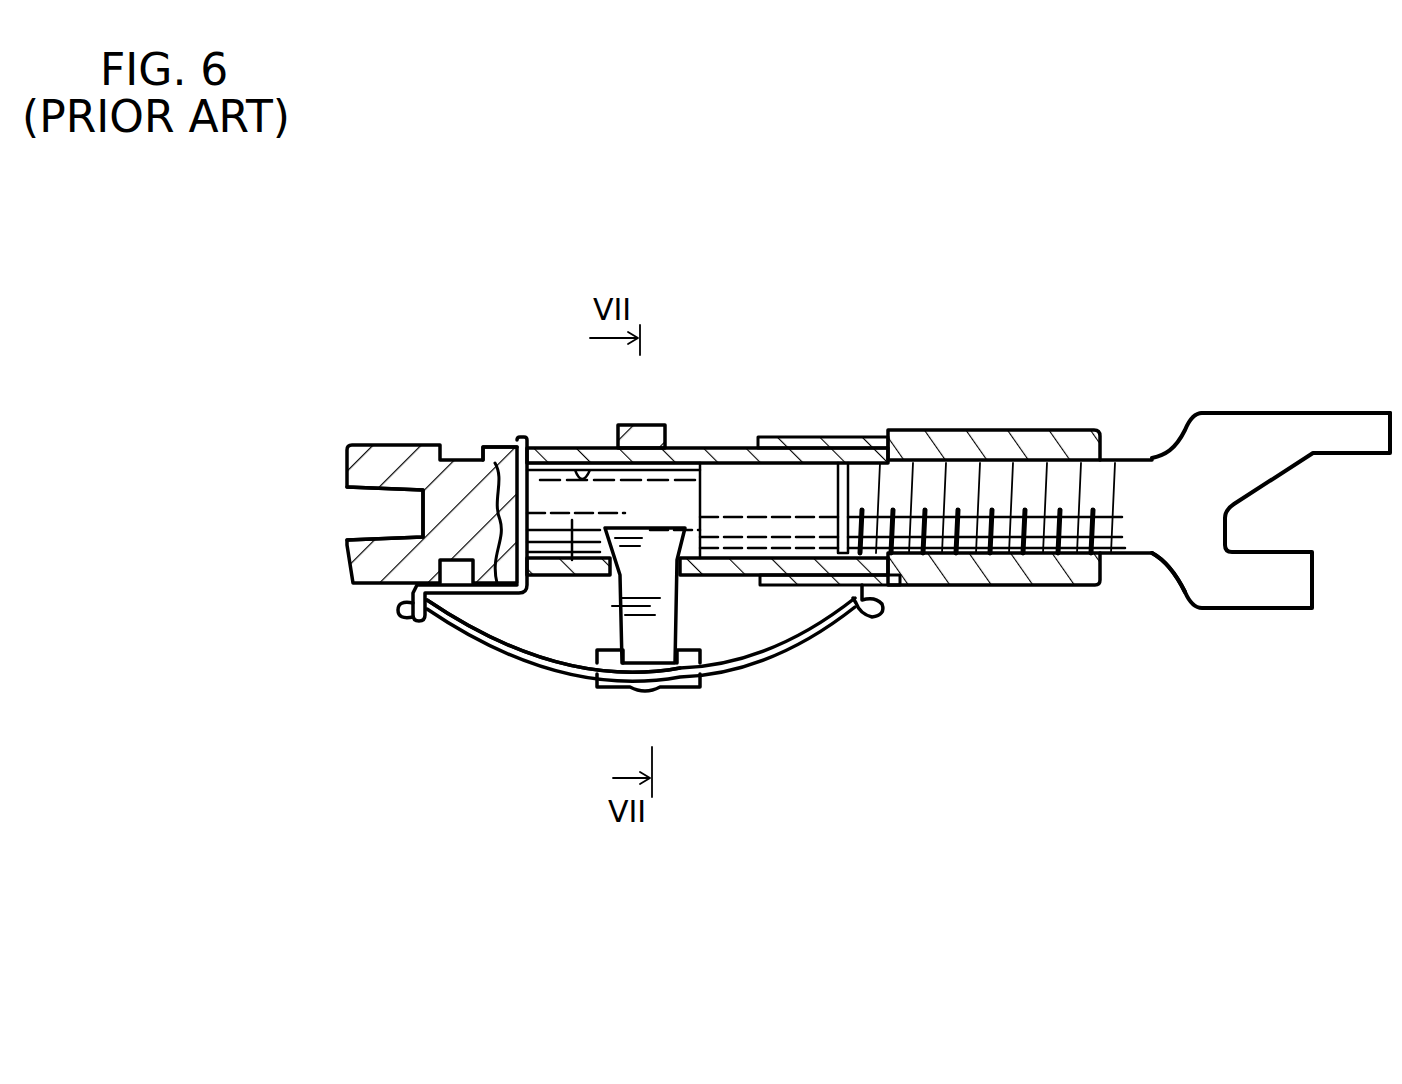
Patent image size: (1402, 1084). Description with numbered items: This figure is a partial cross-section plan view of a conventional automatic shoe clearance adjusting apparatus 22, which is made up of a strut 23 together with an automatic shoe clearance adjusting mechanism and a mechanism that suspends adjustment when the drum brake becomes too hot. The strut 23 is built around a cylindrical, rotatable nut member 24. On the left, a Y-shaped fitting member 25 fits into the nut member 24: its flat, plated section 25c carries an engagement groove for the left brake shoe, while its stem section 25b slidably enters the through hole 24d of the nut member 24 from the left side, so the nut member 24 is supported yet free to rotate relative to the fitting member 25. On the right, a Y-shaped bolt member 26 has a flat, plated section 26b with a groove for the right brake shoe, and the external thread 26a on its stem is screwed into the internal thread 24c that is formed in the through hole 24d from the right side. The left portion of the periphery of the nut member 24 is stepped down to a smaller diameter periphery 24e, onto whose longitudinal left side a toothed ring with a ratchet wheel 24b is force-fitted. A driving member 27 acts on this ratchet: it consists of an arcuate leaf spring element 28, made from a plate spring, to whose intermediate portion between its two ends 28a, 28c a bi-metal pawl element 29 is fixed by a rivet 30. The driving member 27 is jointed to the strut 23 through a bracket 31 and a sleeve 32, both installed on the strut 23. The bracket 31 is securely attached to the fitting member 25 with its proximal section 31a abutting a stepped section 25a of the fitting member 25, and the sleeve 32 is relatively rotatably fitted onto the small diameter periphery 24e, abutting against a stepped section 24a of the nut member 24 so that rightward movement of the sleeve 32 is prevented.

The automatic shoe clearance adjusting apparatus 22 is at (1041, 656).
The strut 23 is at (929, 414).
The nut member 24 is at (1003, 432).
The stepped section 24a is at (890, 437).
The ratchet wheel 24b is at (647, 424).
The internal thread 24c is at (1112, 475).
The through hole 24d is at (590, 450).
The smaller diameter periphery 24e is at (715, 448).
The fitting member 25 is at (370, 588).
The stepped section 25a is at (545, 455).
The stem section 25b is at (572, 560).
The flat, plated section 25c is at (380, 453).
The bolt member 26 is at (1323, 413).
The external thread 26a is at (1130, 575).
The flat, plated section 26b is at (1246, 425).
The driving member 27 is at (737, 685).
The leaf spring element 28 is at (770, 655).
The end of leaf spring element 28a is at (440, 622).
The end of leaf spring element 28c is at (856, 612).
The pawl element 29 is at (622, 612).
The rivet 30 is at (653, 689).
The bracket 31 is at (495, 597).
The proximal section 31a is at (470, 447).
The sleeve 32 is at (800, 586).